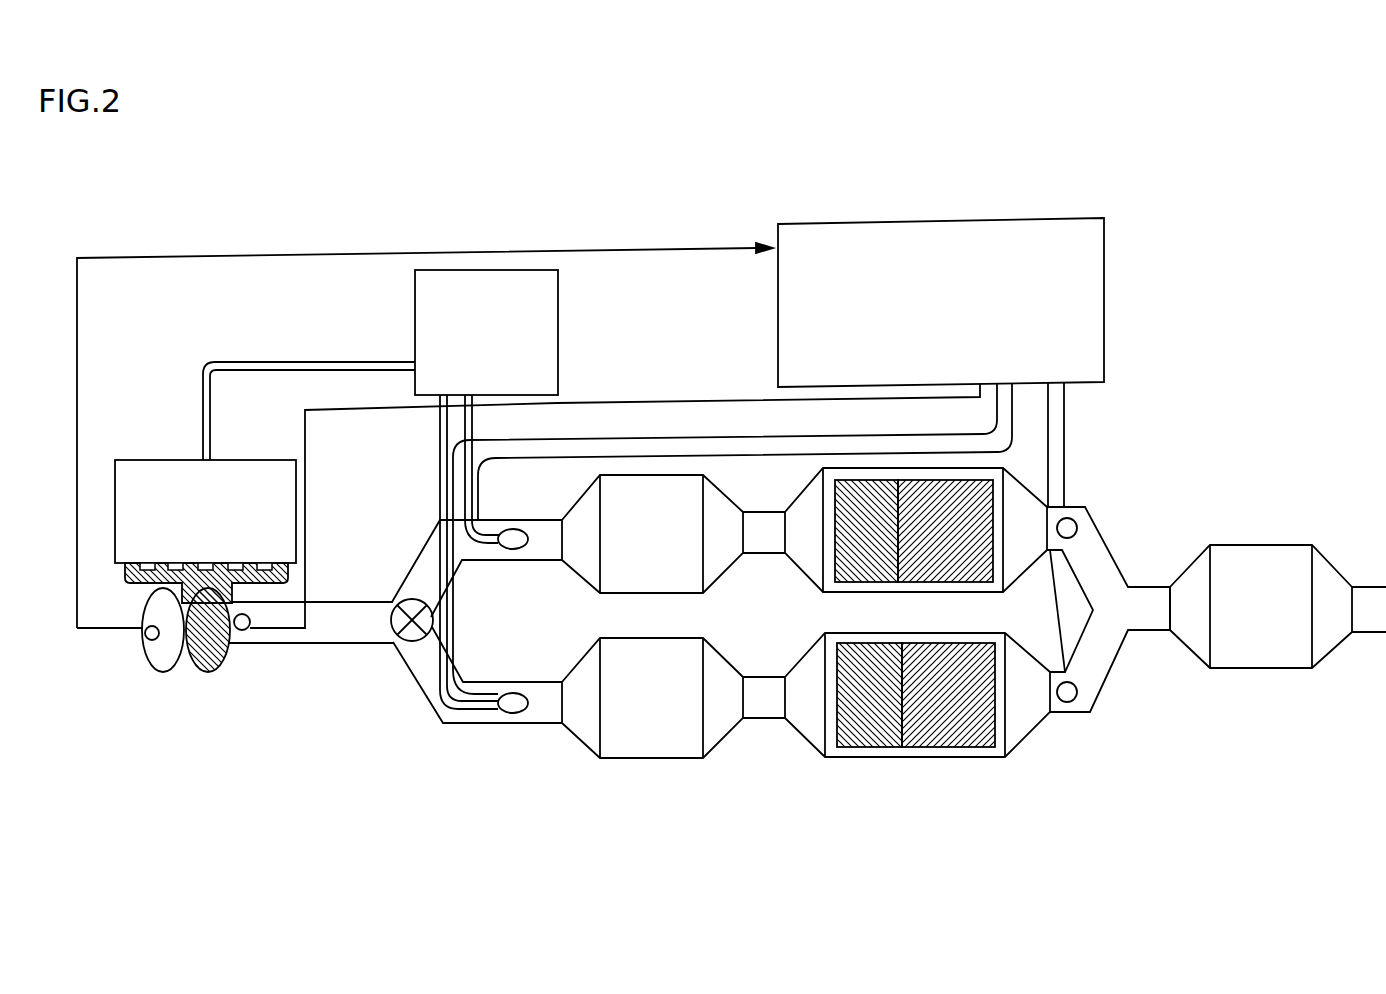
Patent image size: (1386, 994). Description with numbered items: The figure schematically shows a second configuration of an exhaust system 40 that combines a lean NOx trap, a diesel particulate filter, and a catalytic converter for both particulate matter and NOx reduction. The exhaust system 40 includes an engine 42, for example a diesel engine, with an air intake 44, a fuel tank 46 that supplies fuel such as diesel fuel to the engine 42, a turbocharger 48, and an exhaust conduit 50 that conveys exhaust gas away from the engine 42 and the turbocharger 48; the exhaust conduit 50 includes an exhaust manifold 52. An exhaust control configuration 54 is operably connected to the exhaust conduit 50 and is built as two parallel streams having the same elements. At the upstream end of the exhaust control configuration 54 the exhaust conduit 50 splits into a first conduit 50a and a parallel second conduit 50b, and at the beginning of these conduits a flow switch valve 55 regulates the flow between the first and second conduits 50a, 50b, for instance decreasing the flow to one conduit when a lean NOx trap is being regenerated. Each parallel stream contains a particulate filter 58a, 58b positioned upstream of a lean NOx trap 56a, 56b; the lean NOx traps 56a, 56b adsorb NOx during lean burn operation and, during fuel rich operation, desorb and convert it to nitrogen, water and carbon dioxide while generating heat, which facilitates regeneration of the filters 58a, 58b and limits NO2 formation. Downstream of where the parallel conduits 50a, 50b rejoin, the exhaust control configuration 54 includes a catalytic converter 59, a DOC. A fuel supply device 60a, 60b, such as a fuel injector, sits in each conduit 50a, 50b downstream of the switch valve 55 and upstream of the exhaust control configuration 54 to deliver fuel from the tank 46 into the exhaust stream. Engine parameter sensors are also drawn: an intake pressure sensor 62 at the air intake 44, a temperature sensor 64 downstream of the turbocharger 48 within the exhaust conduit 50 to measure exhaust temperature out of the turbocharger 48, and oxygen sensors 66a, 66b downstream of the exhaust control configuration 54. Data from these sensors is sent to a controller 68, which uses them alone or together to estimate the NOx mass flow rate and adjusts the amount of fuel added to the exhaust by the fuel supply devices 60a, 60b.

The exhaust system 40 is at (880, 181).
The engine 42 is at (155, 458).
The air intake 44 is at (157, 671).
The fuel tank 46 is at (493, 268).
The turbocharger 48 is at (208, 673).
The exhaust conduit 50 is at (353, 600).
The first conduit 50a is at (425, 547).
The second conduit 50b is at (470, 725).
The exhaust manifold 52 is at (142, 585).
The exhaust control configuration 54 is at (1127, 481).
The flow switch valve 55 is at (413, 632).
The lean NOx trap 56a is at (980, 476).
The lean NOx trap 56b is at (970, 748).
The particulate filter 58a is at (650, 473).
The particulate filter 58b is at (657, 760).
The catalytic converter 59 is at (1268, 545).
The fuel supply device 60a is at (515, 528).
The fuel supply device 60b is at (520, 692).
The intake pressure sensor 62 is at (146, 637).
The temperature sensor 64 is at (243, 631).
The oxygen sensor 66a is at (1077, 528).
The oxygen sensor 66b is at (1077, 694).
The controller 68 is at (1007, 217).